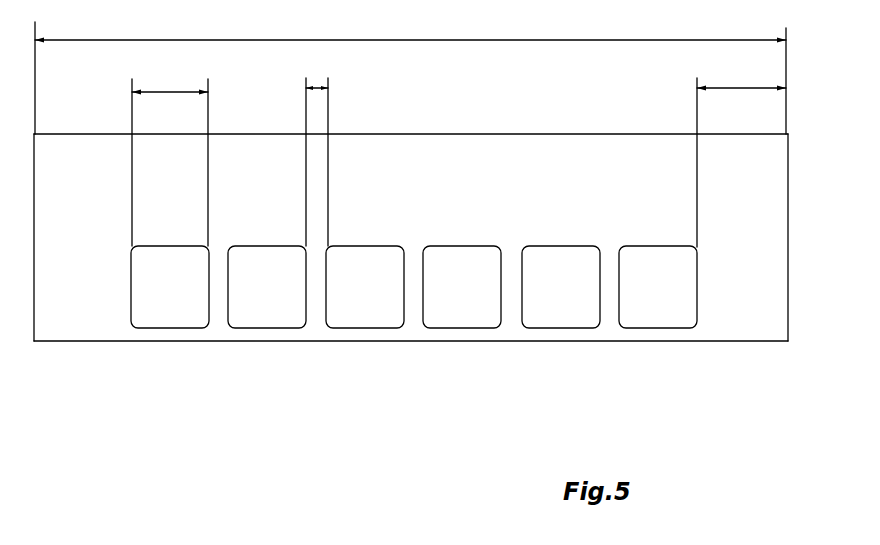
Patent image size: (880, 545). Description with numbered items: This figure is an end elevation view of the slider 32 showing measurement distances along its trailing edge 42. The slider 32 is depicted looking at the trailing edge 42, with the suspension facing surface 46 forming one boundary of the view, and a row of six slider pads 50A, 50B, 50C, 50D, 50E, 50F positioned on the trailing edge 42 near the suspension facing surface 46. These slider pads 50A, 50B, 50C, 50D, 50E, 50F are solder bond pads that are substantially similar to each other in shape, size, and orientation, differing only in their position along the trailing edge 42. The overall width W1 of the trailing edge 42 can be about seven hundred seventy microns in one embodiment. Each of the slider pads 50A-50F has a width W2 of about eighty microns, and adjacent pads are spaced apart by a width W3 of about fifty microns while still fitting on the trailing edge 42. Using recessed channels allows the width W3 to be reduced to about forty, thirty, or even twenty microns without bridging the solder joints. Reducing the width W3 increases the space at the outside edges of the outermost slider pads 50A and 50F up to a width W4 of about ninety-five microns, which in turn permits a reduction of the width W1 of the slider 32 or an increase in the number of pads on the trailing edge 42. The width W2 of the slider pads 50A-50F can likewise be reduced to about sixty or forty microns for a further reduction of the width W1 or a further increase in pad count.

The slider 32 is at (796, 151).
The trailing edge 42 is at (762, 188).
The suspension facing surface 46 is at (736, 343).
The slider pad 50A is at (146, 299).
The slider pad 50B is at (243, 299).
The slider pad 50C is at (341, 299).
The slider pad 50D is at (438, 299).
The slider pad 50E is at (537, 299).
The slider pad 50F is at (634, 299).
The width of trailing edge W1 is at (425, 40).
The width of slider pads W2 is at (168, 91).
The spacing width between slider pads W3 is at (316, 86).
The width at outside edges of slider pads W4 is at (740, 87).